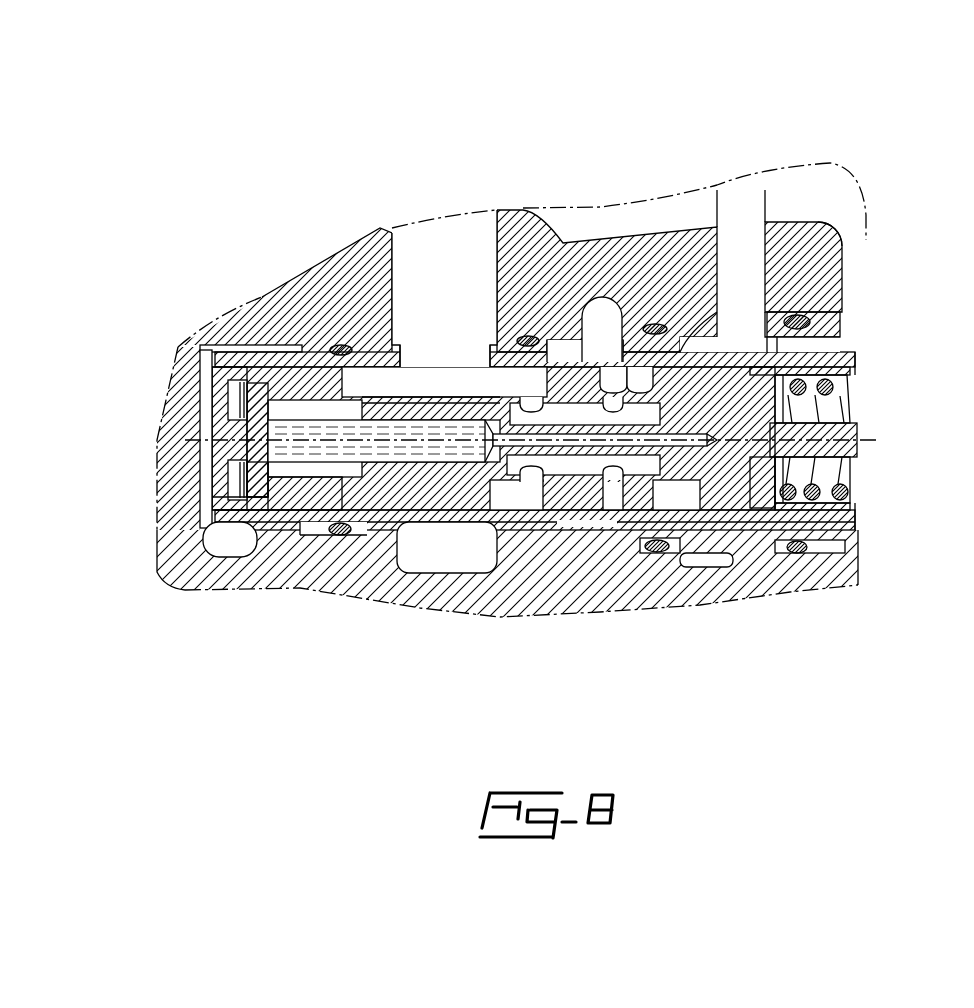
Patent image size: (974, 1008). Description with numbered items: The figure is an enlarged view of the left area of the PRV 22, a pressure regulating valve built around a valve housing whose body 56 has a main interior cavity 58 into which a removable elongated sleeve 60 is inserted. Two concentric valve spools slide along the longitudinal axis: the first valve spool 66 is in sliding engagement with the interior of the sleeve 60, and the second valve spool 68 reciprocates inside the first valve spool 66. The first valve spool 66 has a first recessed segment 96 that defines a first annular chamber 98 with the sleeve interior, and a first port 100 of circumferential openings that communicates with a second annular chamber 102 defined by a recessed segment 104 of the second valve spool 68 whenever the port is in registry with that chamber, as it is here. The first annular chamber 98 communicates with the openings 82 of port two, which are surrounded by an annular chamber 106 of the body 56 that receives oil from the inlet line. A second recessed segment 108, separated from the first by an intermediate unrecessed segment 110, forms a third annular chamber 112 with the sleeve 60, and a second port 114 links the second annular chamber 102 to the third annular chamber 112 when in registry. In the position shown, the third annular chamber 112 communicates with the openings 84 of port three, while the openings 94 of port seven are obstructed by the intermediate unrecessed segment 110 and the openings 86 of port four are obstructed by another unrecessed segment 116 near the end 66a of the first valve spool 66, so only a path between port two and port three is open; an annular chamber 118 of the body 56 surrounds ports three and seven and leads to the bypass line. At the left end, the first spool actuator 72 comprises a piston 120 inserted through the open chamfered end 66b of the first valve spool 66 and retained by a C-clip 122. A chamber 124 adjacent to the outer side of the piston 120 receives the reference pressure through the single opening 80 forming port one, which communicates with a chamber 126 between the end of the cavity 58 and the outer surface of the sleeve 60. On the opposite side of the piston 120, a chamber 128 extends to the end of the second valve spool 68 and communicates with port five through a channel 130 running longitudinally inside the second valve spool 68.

The PRV 22 is at (891, 119).
The body 56 is at (653, 270).
The main interior cavity 58 is at (247, 343).
The sleeve 60 is at (815, 362).
The first valve spool 66 is at (322, 383).
The end of the first valve spool 66a is at (758, 463).
The open chamfered end of the first valve spool 66b is at (242, 505).
The second valve spool 68 is at (435, 467).
The first spool actuator 72 is at (262, 470).
The opening 80 is at (208, 393).
The openings 82 is at (450, 372).
The openings 84 is at (713, 363).
The openings 86 is at (802, 324).
The openings 94 is at (572, 363).
The first recessed segment 96 is at (411, 390).
The first annular chamber 98 is at (382, 382).
The first port 100 is at (532, 402).
The second annular chamber 102 is at (580, 413).
The recessed segment 104 is at (551, 416).
The annular chamber 106 is at (468, 264).
The second recessed segment 108 is at (642, 381).
The intermediate unrecessed segment 110 is at (585, 383).
The third annular chamber 112 is at (833, 251).
The second port 114 is at (613, 405).
The unrecessed segment 116 is at (838, 332).
The annular chamber 118 is at (610, 382).
The piston 120 is at (270, 487).
The C-clip 122 is at (233, 482).
The chamber 124 is at (233, 407).
The chamber 126 is at (215, 535).
The chamber 128 is at (347, 455).
The channel 130 is at (677, 440).